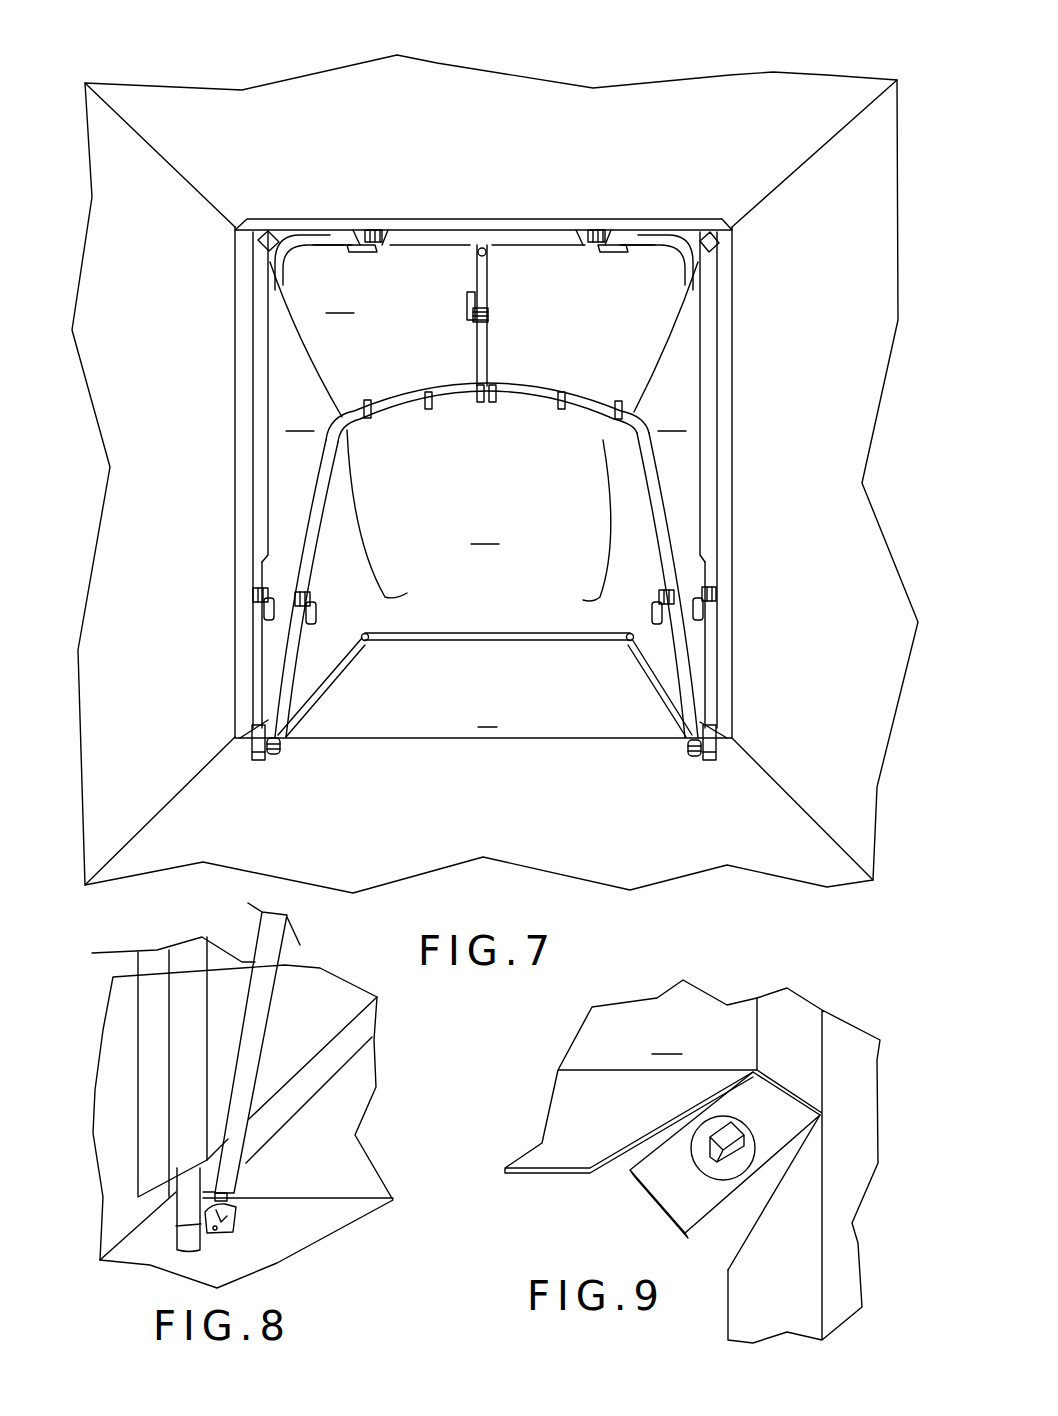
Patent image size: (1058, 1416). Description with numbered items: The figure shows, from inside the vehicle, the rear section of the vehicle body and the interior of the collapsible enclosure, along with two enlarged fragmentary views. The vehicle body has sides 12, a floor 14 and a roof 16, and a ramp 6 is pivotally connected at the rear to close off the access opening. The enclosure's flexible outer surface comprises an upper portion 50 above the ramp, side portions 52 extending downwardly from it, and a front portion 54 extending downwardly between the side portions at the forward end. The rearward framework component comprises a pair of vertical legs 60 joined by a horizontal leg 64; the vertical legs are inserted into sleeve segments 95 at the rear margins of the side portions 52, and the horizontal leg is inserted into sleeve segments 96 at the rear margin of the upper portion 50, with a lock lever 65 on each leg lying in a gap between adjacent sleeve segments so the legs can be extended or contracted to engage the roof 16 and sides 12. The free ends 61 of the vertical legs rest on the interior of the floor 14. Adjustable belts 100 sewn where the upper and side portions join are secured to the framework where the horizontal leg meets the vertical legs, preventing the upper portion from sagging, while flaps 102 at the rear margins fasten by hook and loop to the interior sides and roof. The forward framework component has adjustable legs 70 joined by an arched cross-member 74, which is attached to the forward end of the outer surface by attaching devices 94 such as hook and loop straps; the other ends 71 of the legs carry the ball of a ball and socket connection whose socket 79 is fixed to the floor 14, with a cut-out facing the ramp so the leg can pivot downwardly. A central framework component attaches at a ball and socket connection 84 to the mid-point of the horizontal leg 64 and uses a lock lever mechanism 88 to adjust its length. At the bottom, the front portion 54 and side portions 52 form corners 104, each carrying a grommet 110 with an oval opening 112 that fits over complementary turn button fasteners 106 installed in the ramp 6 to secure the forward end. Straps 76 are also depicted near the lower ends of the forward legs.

In FIG. 7, the ramp 6 is at (483, 717).
In FIG. 7, the sides 12 is at (143, 472).
In FIG. 7, the floor 14 is at (665, 848).
In FIG. 7, the roof 16 is at (585, 110).
In FIG. 7, the upper portion 50 is at (484, 339).
In FIG. 7, the side portions 52 is at (483, 570).
In FIG. 9, the side portions 52 is at (852, 1067).
In FIG. 7, the front portion 54 is at (479, 515).
In FIG. 9, the front portion 54 is at (631, 1076).
In FIG. 7, the vertical legs 60 is at (245, 563).
In FIG. 7, the free ends 61 is at (260, 760).
In FIG. 8, the free ends 61 is at (183, 1250).
In FIG. 7, the horizontal leg 64 is at (678, 224).
In FIG. 7, the lock lever 65 is at (368, 248).
In FIG. 7, the legs 70 is at (334, 525).
In FIG. 7, the ends of the pair of legs 71 is at (277, 743).
In FIG. 8, the ends of the pair of legs 71 is at (242, 1192).
In FIG. 7, the arched cross-member 74 is at (445, 419).
In FIG. 7, the strap 76 is at (317, 610).
In FIG. 8, the socket 79 is at (237, 1210).
In FIG. 7, the ball and socket connection 84 is at (505, 271).
In FIG. 7, the lock lever mechanism 88 is at (465, 306).
In FIG. 7, the attaching devices 94 is at (368, 401).
In FIG. 7, the sleeve segments 95 is at (263, 362).
In FIG. 7, the sleeve segments 96 is at (328, 236).
In FIG. 7, the adjustable belts 100 is at (253, 247).
In FIG. 7, the flaps 102 is at (417, 227).
In FIG. 7, the corners 104 is at (370, 643).
In FIG. 9, the turn button fasteners 106 is at (731, 1122).
In FIG. 9, the grommet 110 is at (705, 1167).
In FIG. 9, the oval opening 112 is at (735, 1162).